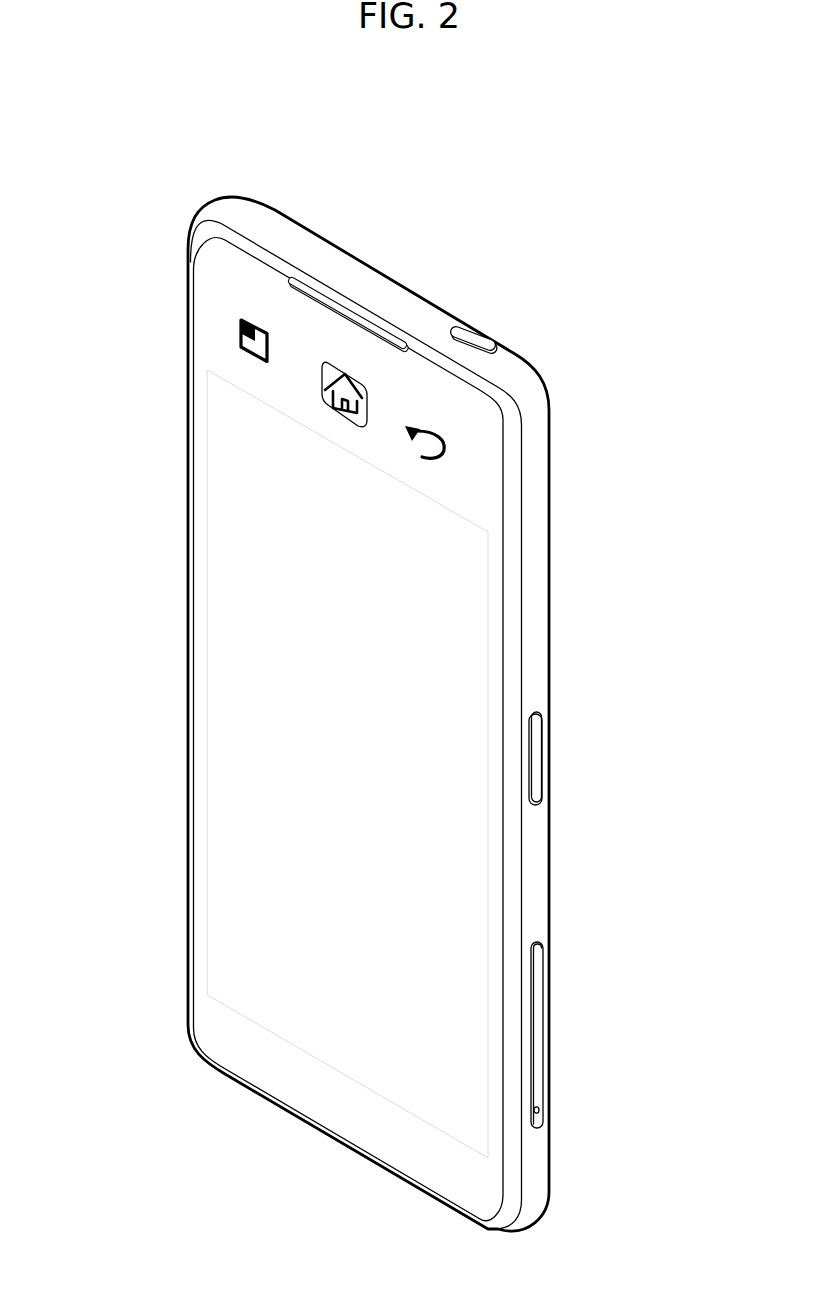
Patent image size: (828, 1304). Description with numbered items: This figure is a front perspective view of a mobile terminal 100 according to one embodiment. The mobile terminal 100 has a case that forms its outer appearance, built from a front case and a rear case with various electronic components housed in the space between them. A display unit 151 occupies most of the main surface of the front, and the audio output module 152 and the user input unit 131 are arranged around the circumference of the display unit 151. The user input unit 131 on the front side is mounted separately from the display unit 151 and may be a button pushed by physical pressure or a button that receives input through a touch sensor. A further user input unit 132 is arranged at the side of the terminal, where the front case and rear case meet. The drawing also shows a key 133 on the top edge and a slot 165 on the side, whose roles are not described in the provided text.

The mobile terminal 100 is at (498, 283).
The user input unit 131 is at (330, 372).
The user input unit 132 is at (537, 770).
The power key / manipulation unit 133 is at (478, 341).
The display unit 151 is at (222, 660).
The audio output module 152 is at (357, 322).
The card slot / interface unit 165 is at (537, 1013).